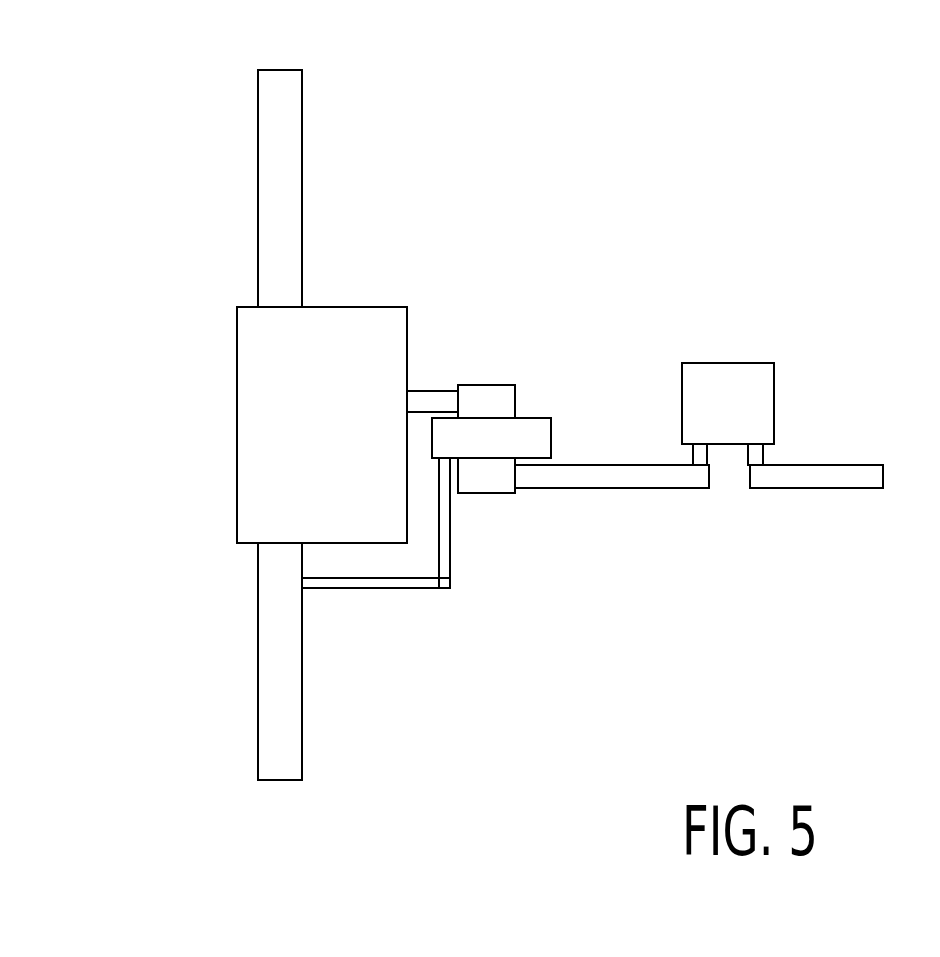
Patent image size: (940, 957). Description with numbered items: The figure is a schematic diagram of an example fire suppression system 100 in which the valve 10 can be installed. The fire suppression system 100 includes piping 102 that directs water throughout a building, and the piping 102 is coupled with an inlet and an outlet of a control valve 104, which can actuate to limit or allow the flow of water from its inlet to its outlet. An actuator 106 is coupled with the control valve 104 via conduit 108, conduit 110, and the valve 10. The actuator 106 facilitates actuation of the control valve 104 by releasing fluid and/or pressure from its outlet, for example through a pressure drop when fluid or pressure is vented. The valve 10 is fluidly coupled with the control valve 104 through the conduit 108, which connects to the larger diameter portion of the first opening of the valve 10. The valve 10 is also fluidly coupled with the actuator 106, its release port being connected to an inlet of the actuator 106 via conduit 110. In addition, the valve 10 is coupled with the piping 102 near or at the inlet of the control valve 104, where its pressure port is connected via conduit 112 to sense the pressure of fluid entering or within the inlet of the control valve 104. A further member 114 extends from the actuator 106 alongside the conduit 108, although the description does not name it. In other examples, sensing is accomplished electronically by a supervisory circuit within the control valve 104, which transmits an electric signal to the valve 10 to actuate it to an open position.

The fire suppression system 100 is at (697, 206).
The piping 102 is at (303, 142).
The control valve 104 is at (235, 323).
The actuator 106 is at (759, 358).
The conduit 108 is at (627, 488).
The conduit 110 is at (433, 388).
The conduit 112 is at (388, 593).
The extension bar 114 is at (843, 488).
The valve 10 is at (532, 385).